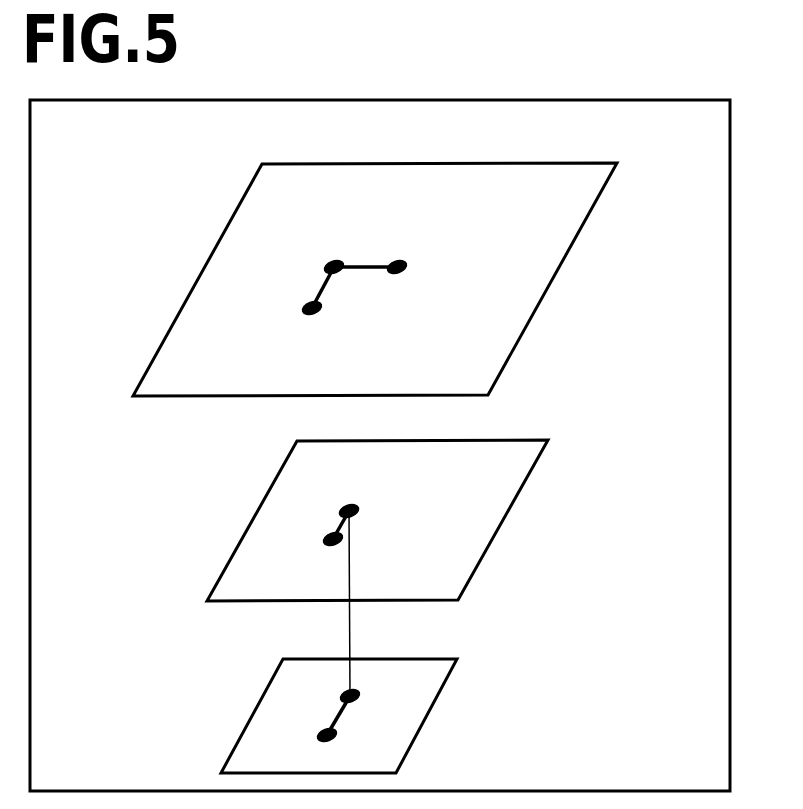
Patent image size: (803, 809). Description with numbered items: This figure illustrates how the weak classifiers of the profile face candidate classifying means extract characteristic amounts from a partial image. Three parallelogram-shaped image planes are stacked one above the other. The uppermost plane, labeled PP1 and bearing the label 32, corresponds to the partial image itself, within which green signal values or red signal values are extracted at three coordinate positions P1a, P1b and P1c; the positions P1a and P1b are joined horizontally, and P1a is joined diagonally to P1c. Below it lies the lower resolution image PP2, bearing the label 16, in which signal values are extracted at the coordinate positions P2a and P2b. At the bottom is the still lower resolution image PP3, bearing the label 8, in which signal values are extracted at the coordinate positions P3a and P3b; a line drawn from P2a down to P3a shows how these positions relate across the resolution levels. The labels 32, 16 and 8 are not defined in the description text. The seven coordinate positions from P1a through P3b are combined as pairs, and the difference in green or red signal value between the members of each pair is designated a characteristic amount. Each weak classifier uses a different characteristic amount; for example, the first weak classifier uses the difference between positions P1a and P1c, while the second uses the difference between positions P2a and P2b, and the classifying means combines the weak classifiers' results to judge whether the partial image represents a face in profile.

The first projection plane member 32 is at (262, 165).
The second projection plane member 16 is at (297, 441).
The third projection plane member 8 is at (283, 659).
The first projection plane PP1 is at (520, 177).
The lower resolution image PP2 is at (513, 448).
The lower resolution image PP3 is at (432, 665).
The coordinate position P1a is at (334, 267).
The coordinate position P1b is at (405, 265).
The coordinate position P1c is at (304, 308).
The coordinate position P2a is at (349, 511).
The coordinate position P2b is at (333, 539).
The coordinate position P3a is at (358, 695).
The coordinate position P3b is at (327, 735).